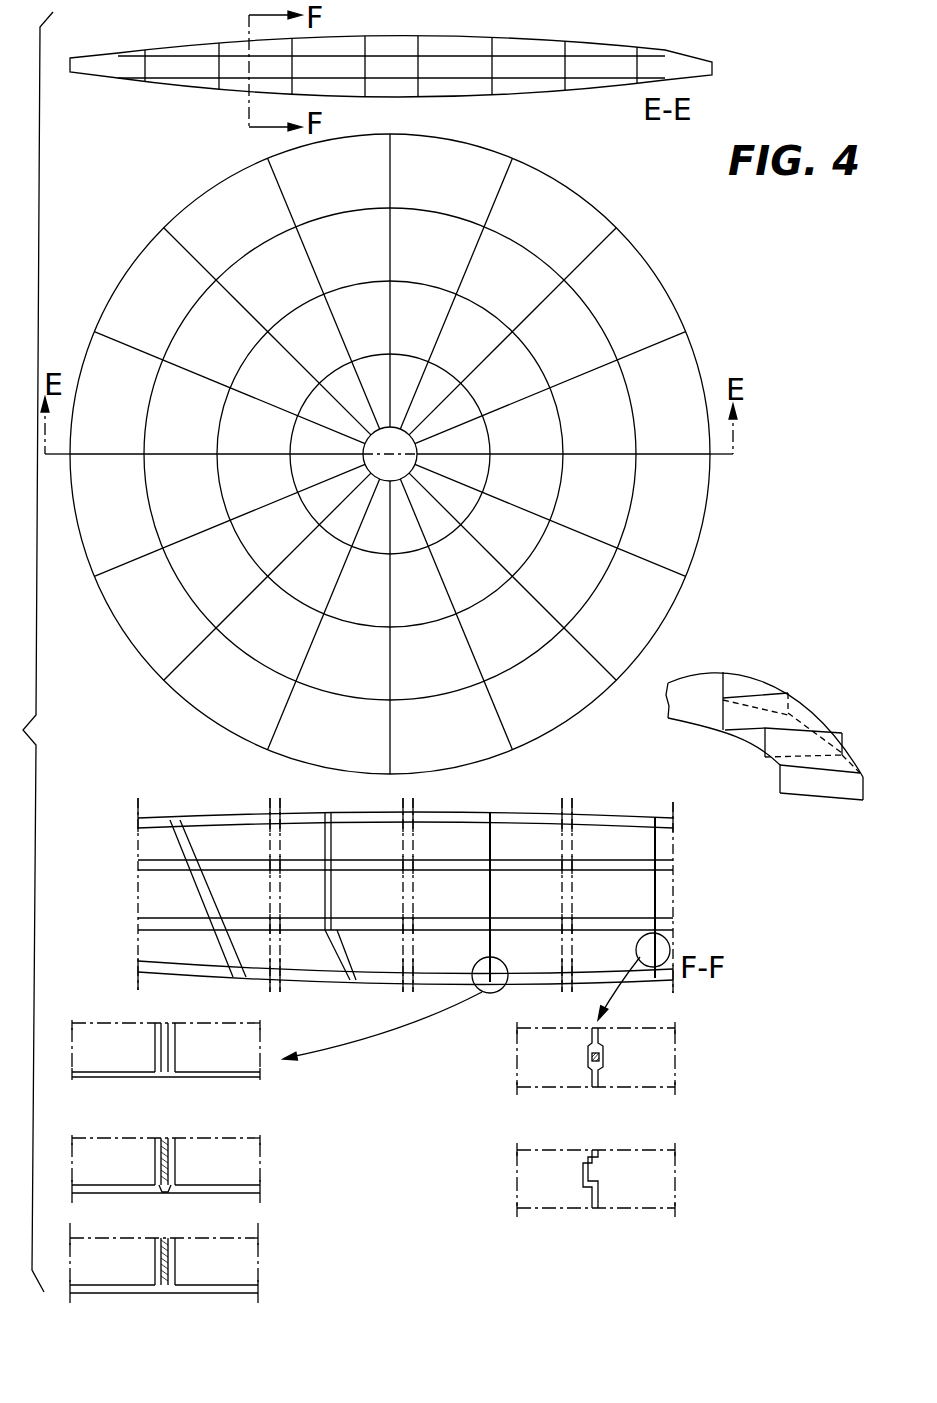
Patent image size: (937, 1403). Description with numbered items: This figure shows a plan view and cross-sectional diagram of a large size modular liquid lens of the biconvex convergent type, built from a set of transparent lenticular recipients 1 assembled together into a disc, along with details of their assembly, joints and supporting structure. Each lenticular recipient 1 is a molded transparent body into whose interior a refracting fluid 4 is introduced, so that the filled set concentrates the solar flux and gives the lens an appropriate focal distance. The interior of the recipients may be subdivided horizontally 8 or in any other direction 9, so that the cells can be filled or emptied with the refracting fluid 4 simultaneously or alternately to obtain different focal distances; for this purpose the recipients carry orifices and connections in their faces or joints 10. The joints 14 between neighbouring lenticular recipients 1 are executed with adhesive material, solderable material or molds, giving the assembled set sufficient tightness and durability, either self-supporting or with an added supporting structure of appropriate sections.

The lenticular recipient 1 is at (203, 68).
The refracting fluid 4 is at (535, 843).
The horizontal subdivision 8 is at (370, 917).
The subdivision in any direction 9 is at (333, 902).
The faces or joints with orifices and connections 10 is at (224, 820).
The joint 14 is at (163, 1076).